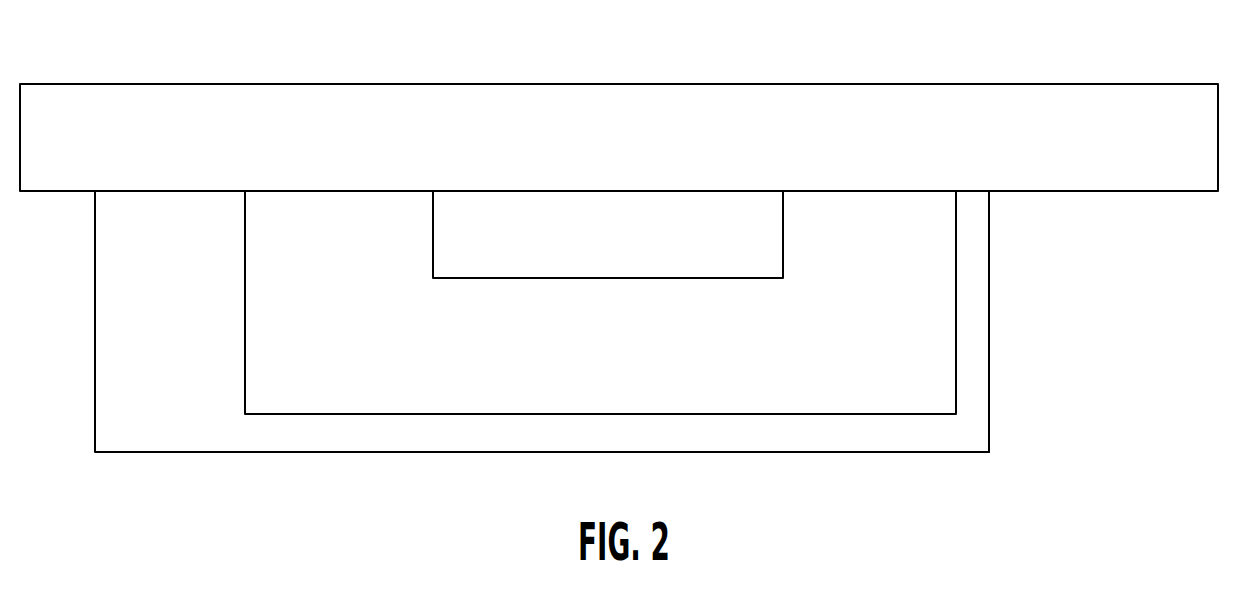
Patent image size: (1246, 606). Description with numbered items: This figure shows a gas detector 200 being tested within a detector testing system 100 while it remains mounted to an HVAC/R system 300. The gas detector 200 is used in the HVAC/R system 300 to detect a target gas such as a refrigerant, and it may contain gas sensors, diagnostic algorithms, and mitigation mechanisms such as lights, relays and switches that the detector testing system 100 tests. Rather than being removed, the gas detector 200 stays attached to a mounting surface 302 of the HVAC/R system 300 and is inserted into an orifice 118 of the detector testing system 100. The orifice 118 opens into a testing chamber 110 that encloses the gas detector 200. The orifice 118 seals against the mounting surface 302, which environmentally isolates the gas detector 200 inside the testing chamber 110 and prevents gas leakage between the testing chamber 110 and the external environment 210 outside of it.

The detector testing system 100 is at (923, 440).
The testing chamber 110 is at (497, 362).
The orifice 118 is at (247, 192).
The gas detector 200 is at (772, 269).
The external environment 210 is at (497, 499).
The HVAC/R system 300 is at (927, 92).
The mounting surface 302 is at (1070, 191).